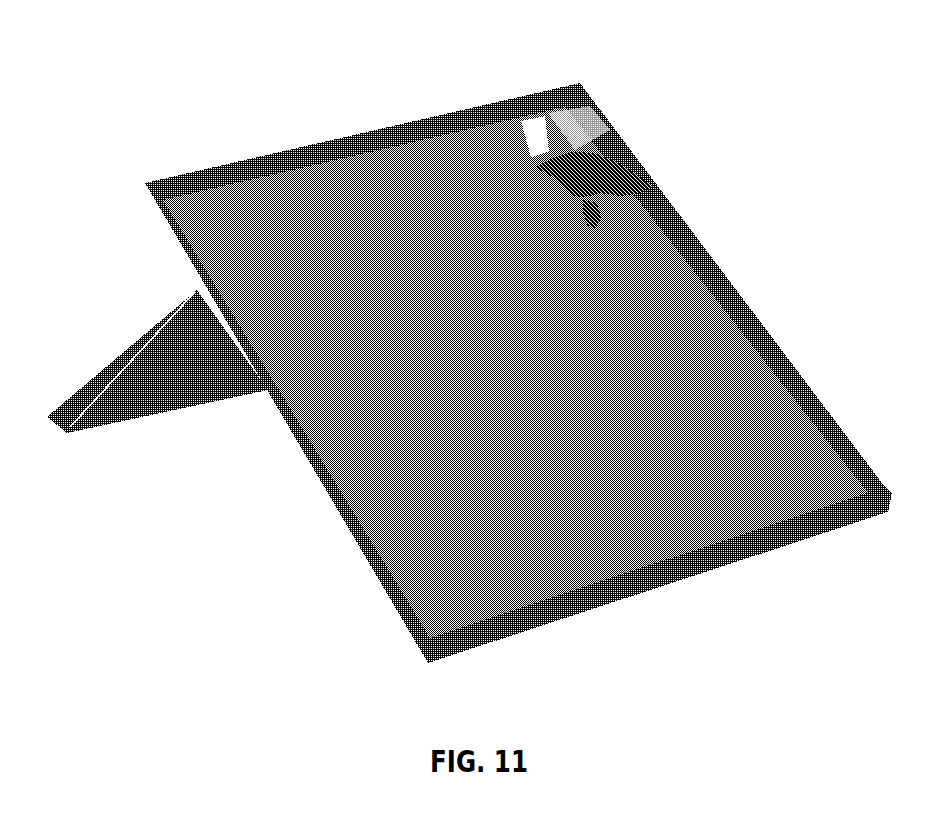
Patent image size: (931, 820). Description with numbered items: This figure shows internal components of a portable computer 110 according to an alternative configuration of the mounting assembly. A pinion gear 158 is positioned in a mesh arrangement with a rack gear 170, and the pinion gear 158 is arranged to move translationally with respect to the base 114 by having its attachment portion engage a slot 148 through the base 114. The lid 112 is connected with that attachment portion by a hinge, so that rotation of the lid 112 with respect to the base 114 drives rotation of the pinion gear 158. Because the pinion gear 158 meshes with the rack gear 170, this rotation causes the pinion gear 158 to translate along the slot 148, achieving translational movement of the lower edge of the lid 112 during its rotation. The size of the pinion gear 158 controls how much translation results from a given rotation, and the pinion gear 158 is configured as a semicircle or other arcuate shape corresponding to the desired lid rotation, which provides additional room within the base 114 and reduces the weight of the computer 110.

The computer 110 is at (460, 338).
The lid 112 is at (67, 433).
The base 114 is at (518, 338).
The slot 148 is at (543, 153).
The pinion gear 158 is at (610, 183).
The rack gear 170 is at (613, 120).